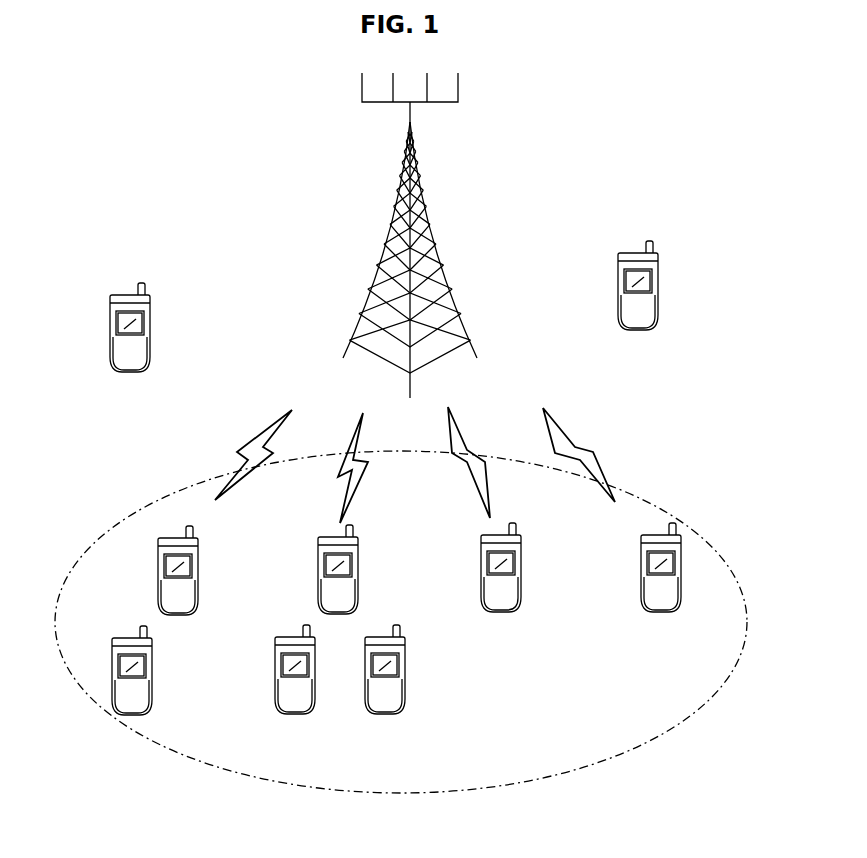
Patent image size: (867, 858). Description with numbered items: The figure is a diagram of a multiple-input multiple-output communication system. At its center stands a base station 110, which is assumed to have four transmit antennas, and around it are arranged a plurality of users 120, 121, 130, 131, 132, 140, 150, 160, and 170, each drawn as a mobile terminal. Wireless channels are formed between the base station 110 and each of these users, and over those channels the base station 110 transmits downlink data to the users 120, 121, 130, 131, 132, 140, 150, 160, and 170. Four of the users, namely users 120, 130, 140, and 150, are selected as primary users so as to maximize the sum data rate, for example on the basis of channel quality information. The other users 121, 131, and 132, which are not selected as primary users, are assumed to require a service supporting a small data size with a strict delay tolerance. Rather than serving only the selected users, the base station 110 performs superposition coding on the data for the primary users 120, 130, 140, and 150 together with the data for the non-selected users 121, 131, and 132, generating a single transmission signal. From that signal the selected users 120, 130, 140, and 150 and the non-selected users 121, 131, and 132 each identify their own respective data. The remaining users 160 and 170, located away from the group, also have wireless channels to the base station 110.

The base station 110 is at (430, 240).
The user 120 is at (172, 540).
The user 121 is at (131, 714).
The user 130 is at (318, 562).
The user 131 is at (291, 714).
The user 132 is at (385, 714).
The user 140 is at (481, 568).
The user 150 is at (641, 566).
The user 160 is at (122, 297).
The user 170 is at (637, 252).